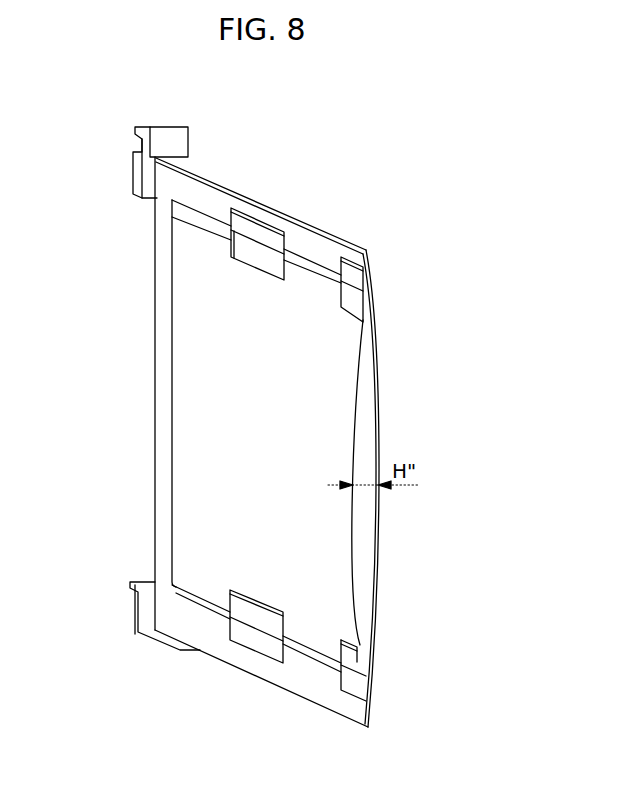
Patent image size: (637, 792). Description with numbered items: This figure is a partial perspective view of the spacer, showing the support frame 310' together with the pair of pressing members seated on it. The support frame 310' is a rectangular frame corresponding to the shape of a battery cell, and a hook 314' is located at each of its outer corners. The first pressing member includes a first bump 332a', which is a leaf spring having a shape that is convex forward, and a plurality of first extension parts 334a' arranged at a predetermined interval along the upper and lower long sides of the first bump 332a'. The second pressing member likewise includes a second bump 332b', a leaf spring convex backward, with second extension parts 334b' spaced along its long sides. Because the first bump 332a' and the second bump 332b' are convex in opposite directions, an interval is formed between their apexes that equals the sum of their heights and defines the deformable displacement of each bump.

The support frame 310' is at (249, 419).
The hook 314' is at (147, 132).
The first bump 332a' is at (121, 393).
The second bump 332b' is at (420, 488).
The first extension parts 334a' is at (196, 436).
The second extension parts 334b' is at (307, 423).